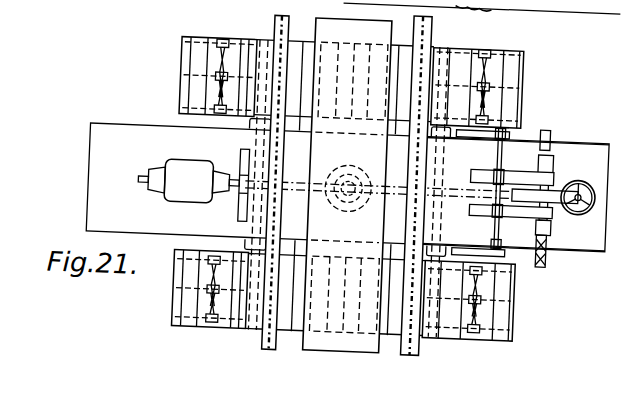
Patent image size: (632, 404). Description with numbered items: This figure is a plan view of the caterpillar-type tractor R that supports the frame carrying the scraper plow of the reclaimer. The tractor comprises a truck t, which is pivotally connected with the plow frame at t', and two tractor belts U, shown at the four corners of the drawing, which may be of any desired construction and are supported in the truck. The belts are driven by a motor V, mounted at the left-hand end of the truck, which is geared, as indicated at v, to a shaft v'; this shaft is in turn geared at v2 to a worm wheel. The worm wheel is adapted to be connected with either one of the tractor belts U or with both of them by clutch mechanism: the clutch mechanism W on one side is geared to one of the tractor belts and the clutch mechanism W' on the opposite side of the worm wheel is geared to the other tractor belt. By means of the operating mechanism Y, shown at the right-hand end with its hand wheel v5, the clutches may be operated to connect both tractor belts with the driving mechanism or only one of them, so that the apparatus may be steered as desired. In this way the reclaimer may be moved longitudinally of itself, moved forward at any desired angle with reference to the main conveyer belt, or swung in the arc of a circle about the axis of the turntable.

The truck t is at (248, 193).
The pivotal connection t' is at (344, 178).
The tractor R is at (170, 124).
The motor V is at (196, 165).
The gearing v is at (227, 183).
The shaft v' is at (351, 202).
The gearing v2 is at (558, 198).
The hand wheel v5 is at (553, 183).
The clutch mechanism W is at (525, 167).
The clutch mechanism W' is at (566, 252).
The tractor belts U is at (500, 0).
The operating mechanism Y is at (515, 193).